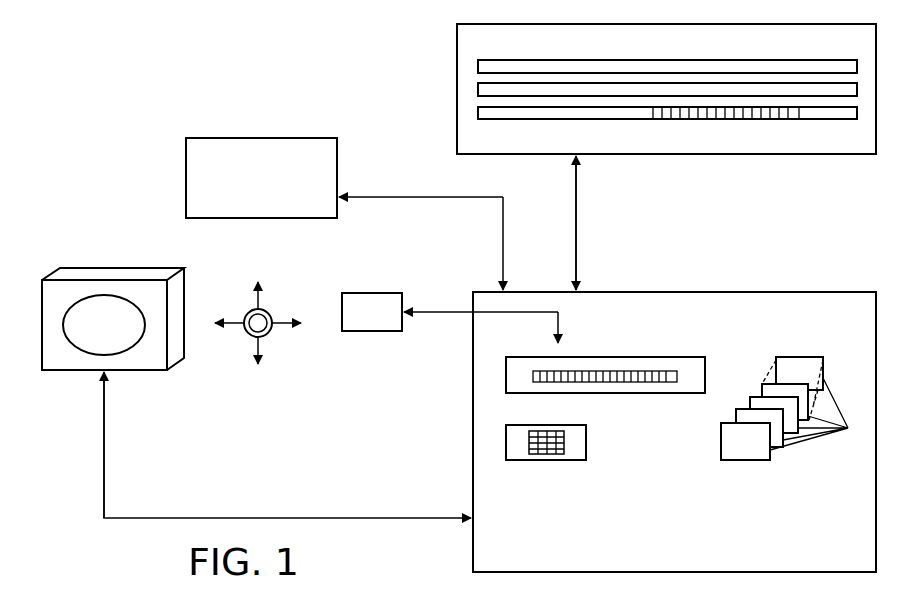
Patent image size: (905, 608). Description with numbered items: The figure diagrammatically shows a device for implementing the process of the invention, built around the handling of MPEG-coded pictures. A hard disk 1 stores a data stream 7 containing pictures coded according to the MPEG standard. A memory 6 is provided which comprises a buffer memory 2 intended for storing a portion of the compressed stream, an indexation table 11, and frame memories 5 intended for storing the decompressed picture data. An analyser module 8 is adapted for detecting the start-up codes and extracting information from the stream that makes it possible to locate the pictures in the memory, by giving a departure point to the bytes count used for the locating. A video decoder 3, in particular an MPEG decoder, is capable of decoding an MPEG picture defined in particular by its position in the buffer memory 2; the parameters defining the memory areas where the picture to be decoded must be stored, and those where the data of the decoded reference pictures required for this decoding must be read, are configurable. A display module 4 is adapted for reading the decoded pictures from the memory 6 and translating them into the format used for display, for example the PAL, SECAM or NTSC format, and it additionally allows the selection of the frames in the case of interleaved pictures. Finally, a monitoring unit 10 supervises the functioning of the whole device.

The hard disk 1 is at (645, 154).
The buffer memory 2 is at (692, 357).
The video decoder 3 is at (262, 138).
The display module 4 is at (107, 268).
The frame memories 5 is at (794, 408).
The memory 6 is at (800, 292).
The data stream 7 is at (478, 112).
The analyser module 8 is at (370, 293).
The monitoring unit 10 is at (265, 334).
The indexation table 11 is at (586, 440).